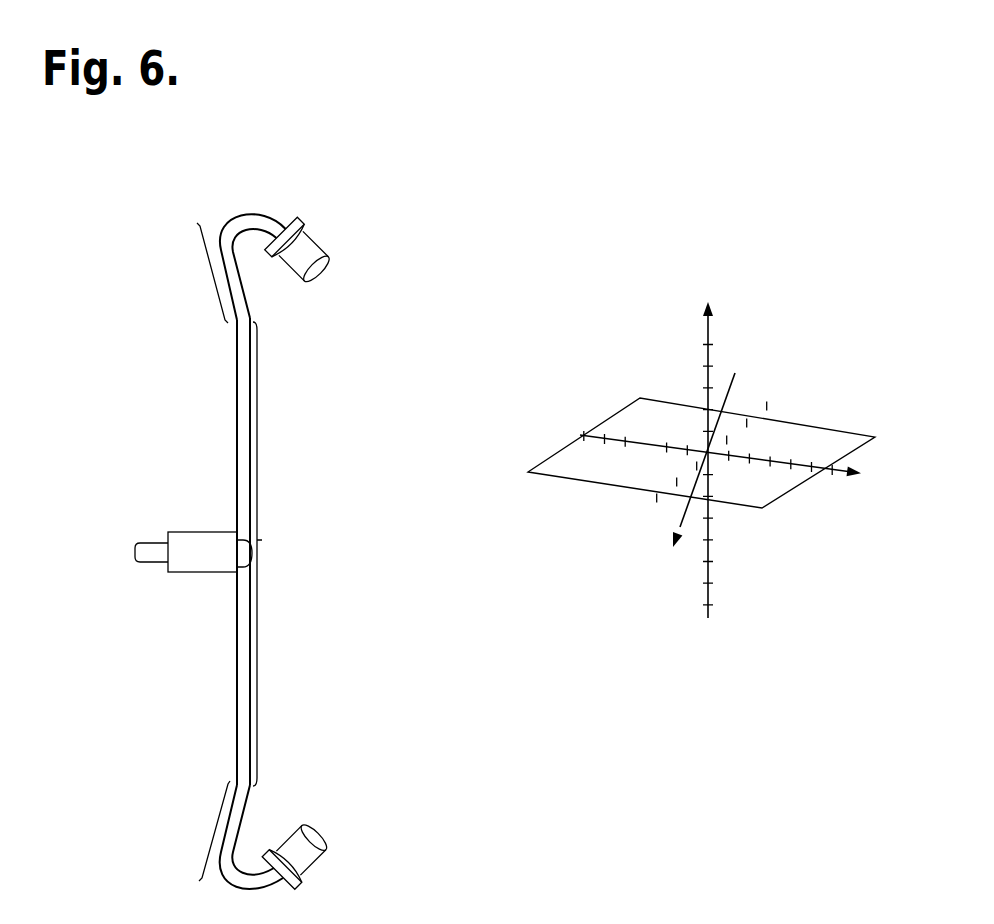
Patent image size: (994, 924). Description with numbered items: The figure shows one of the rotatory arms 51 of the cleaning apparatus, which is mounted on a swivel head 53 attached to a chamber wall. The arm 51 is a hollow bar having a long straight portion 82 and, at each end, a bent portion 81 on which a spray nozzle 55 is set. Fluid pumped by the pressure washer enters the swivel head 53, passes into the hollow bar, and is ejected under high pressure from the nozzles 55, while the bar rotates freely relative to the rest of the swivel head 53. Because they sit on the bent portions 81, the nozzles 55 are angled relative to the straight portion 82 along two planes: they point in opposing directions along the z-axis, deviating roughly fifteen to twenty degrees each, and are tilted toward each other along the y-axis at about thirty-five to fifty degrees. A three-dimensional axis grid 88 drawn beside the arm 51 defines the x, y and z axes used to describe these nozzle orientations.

The rotatory arm 51 is at (331, 172).
The swivel head 53 is at (208, 515).
The spray nozzle 55 is at (313, 235).
The bent portion 81 is at (204, 552).
The straight portion 82 is at (283, 554).
The three-dimensional axis grid 88 is at (719, 257).